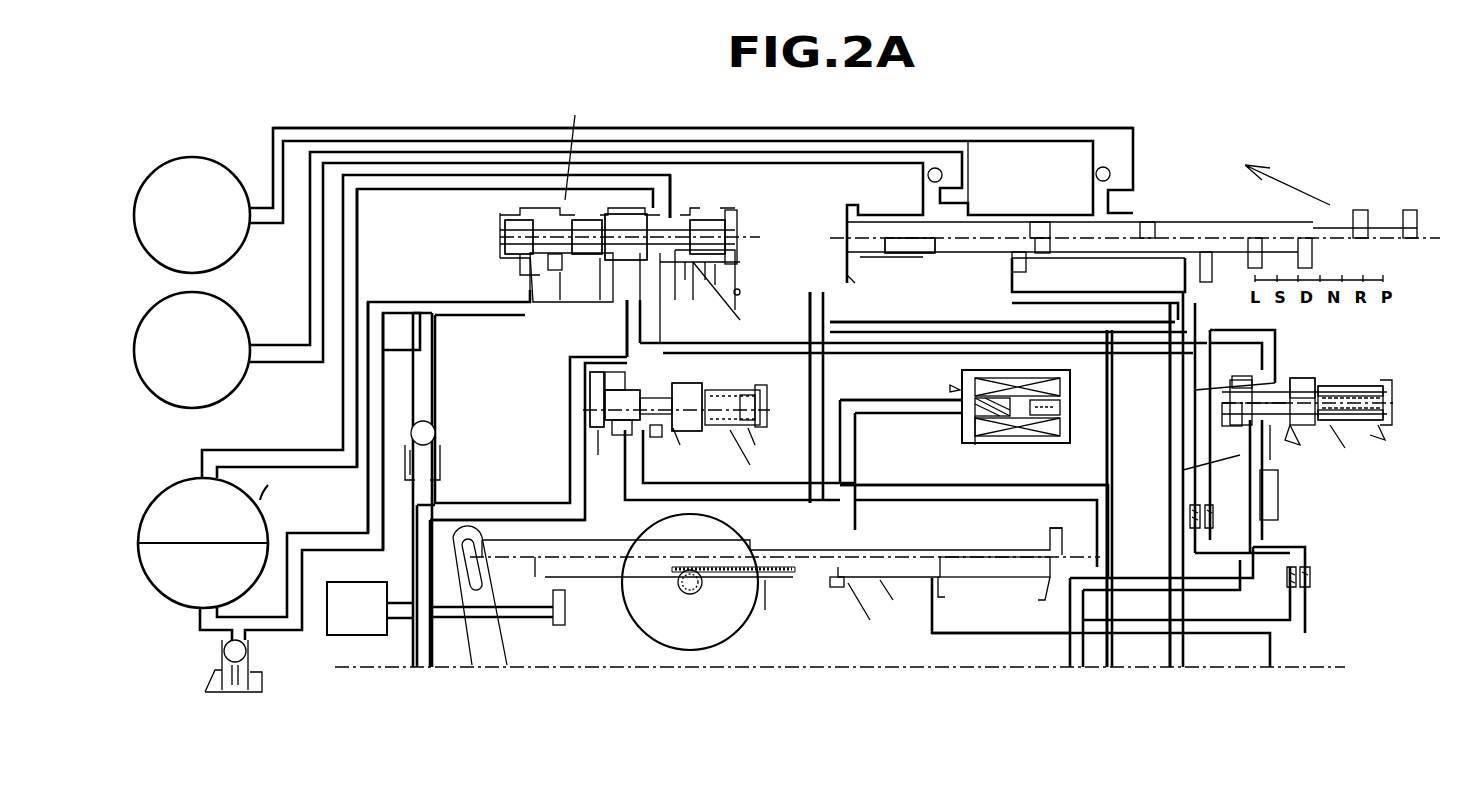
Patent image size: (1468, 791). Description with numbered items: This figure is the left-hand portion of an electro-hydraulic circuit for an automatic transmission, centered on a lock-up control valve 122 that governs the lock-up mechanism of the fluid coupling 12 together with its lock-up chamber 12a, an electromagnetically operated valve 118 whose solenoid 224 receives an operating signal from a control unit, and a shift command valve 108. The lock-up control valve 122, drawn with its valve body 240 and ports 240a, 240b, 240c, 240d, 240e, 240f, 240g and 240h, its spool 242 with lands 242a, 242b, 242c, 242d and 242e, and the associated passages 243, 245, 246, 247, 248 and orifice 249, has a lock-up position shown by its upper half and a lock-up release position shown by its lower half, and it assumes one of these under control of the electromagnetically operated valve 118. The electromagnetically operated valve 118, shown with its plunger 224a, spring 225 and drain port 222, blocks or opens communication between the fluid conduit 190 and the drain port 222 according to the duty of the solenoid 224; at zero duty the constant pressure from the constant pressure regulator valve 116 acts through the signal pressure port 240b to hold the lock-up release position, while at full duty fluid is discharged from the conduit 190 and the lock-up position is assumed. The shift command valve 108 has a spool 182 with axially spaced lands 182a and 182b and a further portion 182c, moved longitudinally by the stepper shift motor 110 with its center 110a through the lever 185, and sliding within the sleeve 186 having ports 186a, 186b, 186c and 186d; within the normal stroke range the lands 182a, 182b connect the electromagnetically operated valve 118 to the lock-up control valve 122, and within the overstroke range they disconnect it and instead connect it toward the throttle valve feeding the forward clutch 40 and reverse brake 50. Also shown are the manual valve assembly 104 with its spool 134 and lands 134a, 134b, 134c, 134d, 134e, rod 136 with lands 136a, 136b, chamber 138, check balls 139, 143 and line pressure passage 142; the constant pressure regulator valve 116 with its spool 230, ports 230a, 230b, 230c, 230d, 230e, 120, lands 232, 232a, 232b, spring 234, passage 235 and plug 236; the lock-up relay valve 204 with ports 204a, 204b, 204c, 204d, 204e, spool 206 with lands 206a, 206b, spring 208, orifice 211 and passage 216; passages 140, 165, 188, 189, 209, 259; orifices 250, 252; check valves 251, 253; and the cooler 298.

The fluid coupling 12 is at (160, 604).
The lock-up chamber 12a is at (285, 490).
The forward clutch 40 is at (240, 310).
The reverse brake 50 is at (233, 176).
The manual valve assembly 104 is at (1193, 155).
The shift command valve 108 is at (893, 595).
The shift motor 110 is at (625, 632).
The pump center 110a is at (695, 592).
The constant pressure regulator valve 116 is at (1344, 446).
The electromagnetically operated valve 118 is at (952, 389).
The valve port 120 is at (749, 457).
The lock-up control valve 122 is at (470, 258).
The manual valve spool 134 is at (1205, 205).
The land 134a is at (852, 275).
The land 134b is at (960, 258).
The passage 134c is at (975, 300).
The land 134d is at (1105, 268).
The land 134e is at (1125, 268).
The manual valve rod 136 is at (1298, 222).
The land 136a is at (1015, 222).
The land 136b is at (1148, 222).
The valve chamber 138 is at (1030, 178).
The check ball 139 is at (1110, 170).
The passage 140 is at (1170, 458).
The line pressure passage 142 is at (812, 152).
The check ball 143 is at (943, 175).
The passage 165 is at (935, 500).
The spool 182 is at (590, 570).
The land 182a is at (790, 575).
The land 182b is at (975, 572).
The shaft portion 182c is at (765, 612).
The lever 185 is at (470, 567).
The sleeve 186 is at (1000, 545).
The sleeve port 186a is at (836, 590).
The sleeve port 186b is at (868, 620).
The sleeve port 186c is at (945, 605).
The sleeve port 186d is at (1058, 590).
The passage 188 is at (828, 372).
The passage 189 is at (963, 635).
The fluid conduit 190 is at (858, 452).
The lock-up control valve 204 is at (1352, 380).
The port 204a is at (1228, 428).
The port 204b is at (1250, 460).
The port 204c is at (1272, 455).
The port 204d is at (1300, 445).
The port 204e is at (1385, 440).
The spool 206 is at (1365, 392).
The land 206a is at (1245, 380).
The land 206b is at (1302, 388).
The spring 208 is at (1370, 410).
The passage 209 is at (1143, 333).
The orifice 211 is at (1278, 505).
The passage 216 is at (1222, 385).
The drain port 222 is at (975, 448).
The solenoid 224 is at (1045, 380).
The plunger 224a is at (990, 398).
The spring 225 is at (1062, 407).
The valve spool 230 is at (748, 395).
The port 230a is at (615, 427).
The port 230b is at (600, 450).
The port 230c is at (655, 440).
The port 230d is at (675, 432).
The port 230e is at (748, 432).
The spool land 232 is at (610, 408).
The land 232a is at (615, 393).
The land 232b is at (752, 392).
The spring 234 is at (748, 405).
The passage 235 is at (715, 350).
The plug 236 is at (610, 392).
The valve body 240 is at (700, 206).
The port 240a is at (520, 265).
The signal pressure port 240b is at (515, 280).
The port 240c is at (560, 272).
The port 240d is at (565, 300).
The port 240e is at (600, 300).
The port 240f is at (740, 262).
The port 240g is at (720, 290).
The port 240h is at (737, 275).
The shift valve spool 242 is at (500, 237).
The land 242a is at (505, 230).
The land 242b is at (575, 228).
The land 242c is at (615, 228).
The land 242d is at (668, 205).
The land 242e is at (735, 230).
The passage 243 is at (360, 228).
The passage 245 is at (387, 380).
The passage 246 is at (525, 305).
The passage 247 is at (579, 144).
The passage 248 is at (680, 300).
The orifice 249 is at (742, 293).
The orifice 250 is at (1192, 520).
The check valve 251 is at (255, 650).
The orifice 252 is at (1308, 585).
The check valve 253 is at (438, 433).
The passage 259 is at (525, 512).
The oil cooler 298 is at (350, 584).